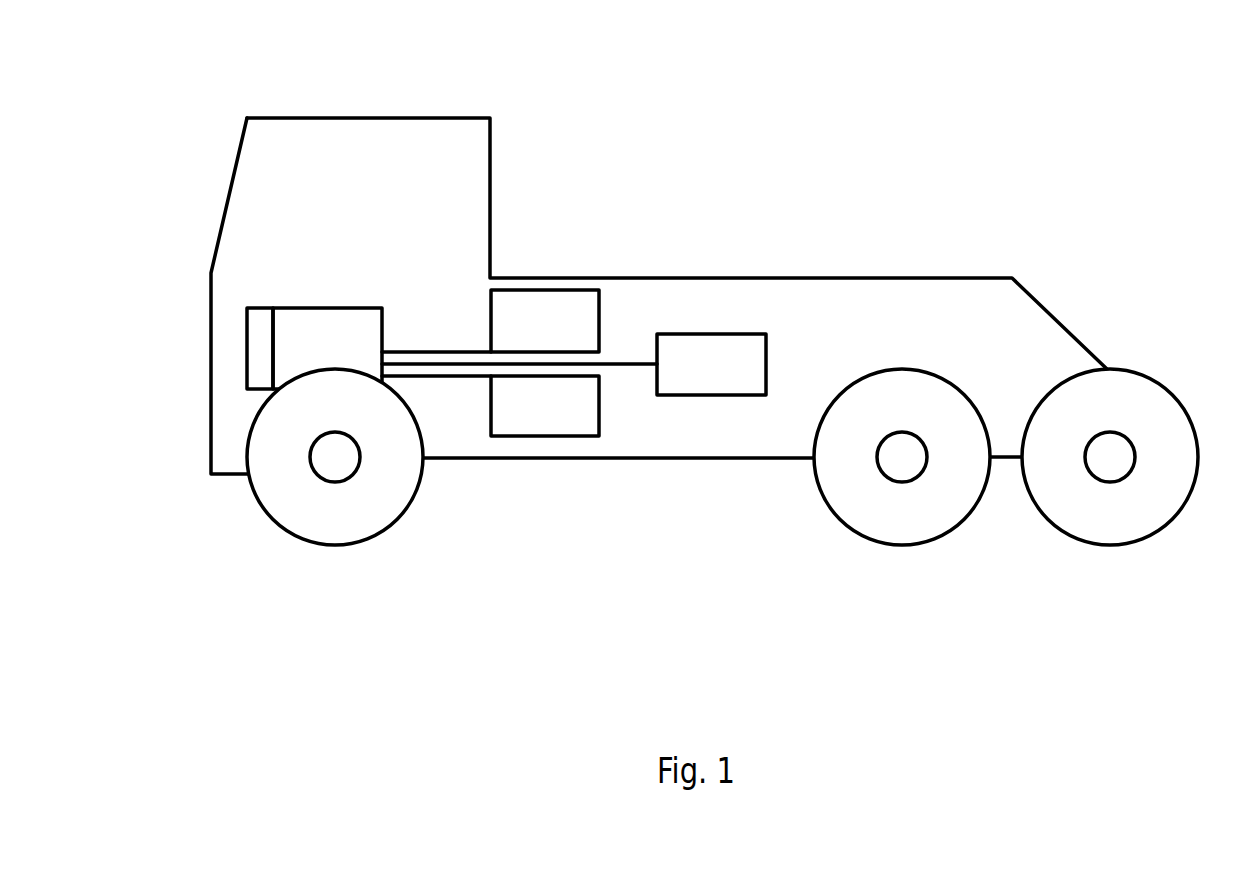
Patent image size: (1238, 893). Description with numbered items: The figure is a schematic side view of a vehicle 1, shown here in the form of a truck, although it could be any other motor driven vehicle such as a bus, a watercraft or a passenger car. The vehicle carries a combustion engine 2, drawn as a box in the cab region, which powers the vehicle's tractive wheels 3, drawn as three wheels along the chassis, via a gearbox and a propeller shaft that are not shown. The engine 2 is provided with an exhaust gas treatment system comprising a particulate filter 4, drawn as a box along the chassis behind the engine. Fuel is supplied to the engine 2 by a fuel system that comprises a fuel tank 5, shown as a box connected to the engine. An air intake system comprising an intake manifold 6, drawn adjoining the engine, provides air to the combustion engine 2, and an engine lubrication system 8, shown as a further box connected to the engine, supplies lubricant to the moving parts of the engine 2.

The vehicle 1 is at (712, 93).
The combustion engine 2 is at (303, 327).
The tractive wheels 3 is at (385, 492).
The particulate filter 4 is at (677, 395).
The fuel tank 5 is at (570, 320).
The intake manifold 6 is at (250, 351).
The engine lubrication system 8 is at (558, 422).